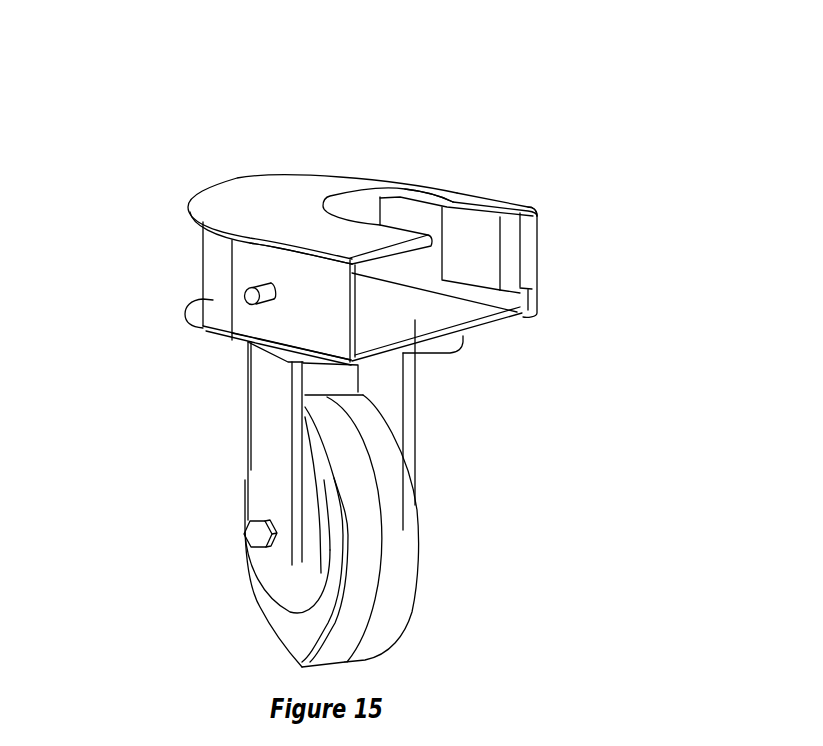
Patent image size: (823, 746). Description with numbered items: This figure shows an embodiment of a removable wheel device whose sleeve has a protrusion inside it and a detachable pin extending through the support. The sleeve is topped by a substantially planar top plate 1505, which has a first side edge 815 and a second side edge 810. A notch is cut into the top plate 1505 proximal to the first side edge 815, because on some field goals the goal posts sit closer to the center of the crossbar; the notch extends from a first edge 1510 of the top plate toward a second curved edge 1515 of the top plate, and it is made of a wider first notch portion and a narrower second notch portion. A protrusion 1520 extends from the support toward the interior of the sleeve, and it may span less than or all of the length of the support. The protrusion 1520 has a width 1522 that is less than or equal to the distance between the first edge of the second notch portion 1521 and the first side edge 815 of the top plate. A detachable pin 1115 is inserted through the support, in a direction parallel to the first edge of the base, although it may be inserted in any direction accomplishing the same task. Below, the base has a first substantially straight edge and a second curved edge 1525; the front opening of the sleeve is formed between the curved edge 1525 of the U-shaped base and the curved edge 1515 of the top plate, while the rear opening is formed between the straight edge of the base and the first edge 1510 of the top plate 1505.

The substantially planar top plate 1505 is at (252, 198).
The second curved edge of the top plate 1515 is at (263, 177).
The detachable pin 1115 is at (270, 284).
The width of the protrusion 1522 is at (458, 196).
The first side edge of the top plate 815 is at (476, 196).
The protrusion 1520 is at (503, 200).
The first edge of the second notch portion 1521 is at (460, 198).
The second side edge of the top plate 810 is at (262, 248).
The second curved edge of the base 1525 is at (187, 315).
The first edge of the top plate 1510 is at (431, 246).